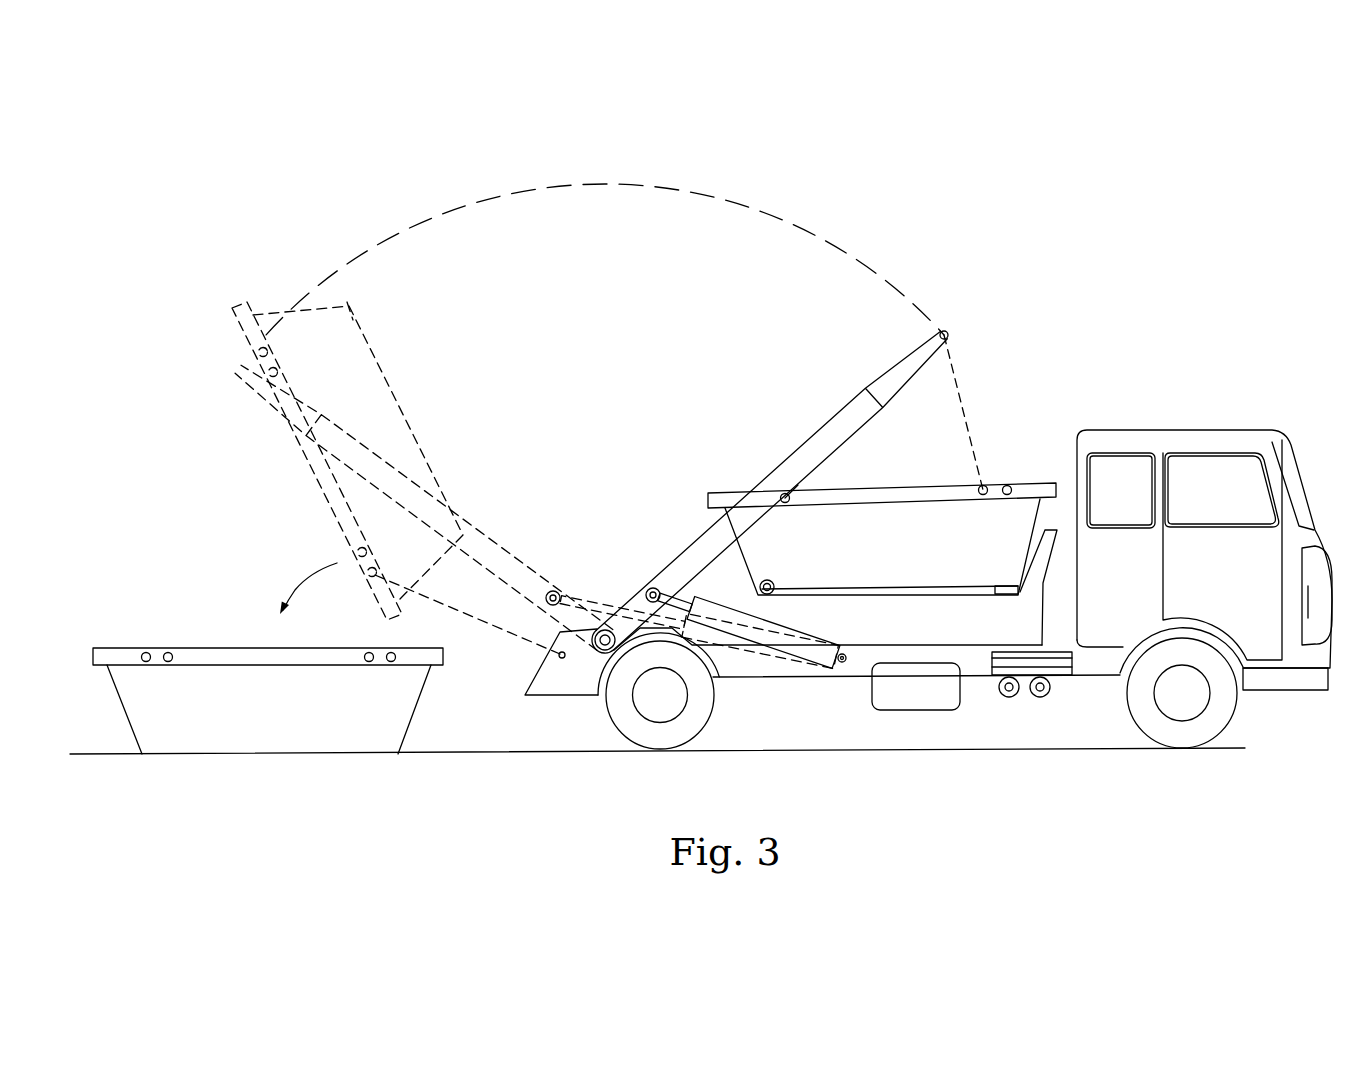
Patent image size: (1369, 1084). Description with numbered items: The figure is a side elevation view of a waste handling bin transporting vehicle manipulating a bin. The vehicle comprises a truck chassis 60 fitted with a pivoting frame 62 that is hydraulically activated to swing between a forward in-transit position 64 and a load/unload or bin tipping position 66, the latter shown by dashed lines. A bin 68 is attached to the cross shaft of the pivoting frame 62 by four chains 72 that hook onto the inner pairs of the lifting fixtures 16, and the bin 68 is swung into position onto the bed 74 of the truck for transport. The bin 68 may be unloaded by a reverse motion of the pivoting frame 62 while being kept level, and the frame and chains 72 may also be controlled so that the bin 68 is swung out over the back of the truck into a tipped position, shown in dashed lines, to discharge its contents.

The truck chassis 60 is at (1090, 262).
The pivoting frame 62 is at (806, 456).
The forward in-transit position 64 is at (902, 275).
The load/unload or bin tipping position 66 is at (288, 476).
The bin 68 is at (882, 539).
The lifting fixtures 16 is at (786, 500).
The chains 72 is at (968, 412).
The bed 74 is at (866, 615).